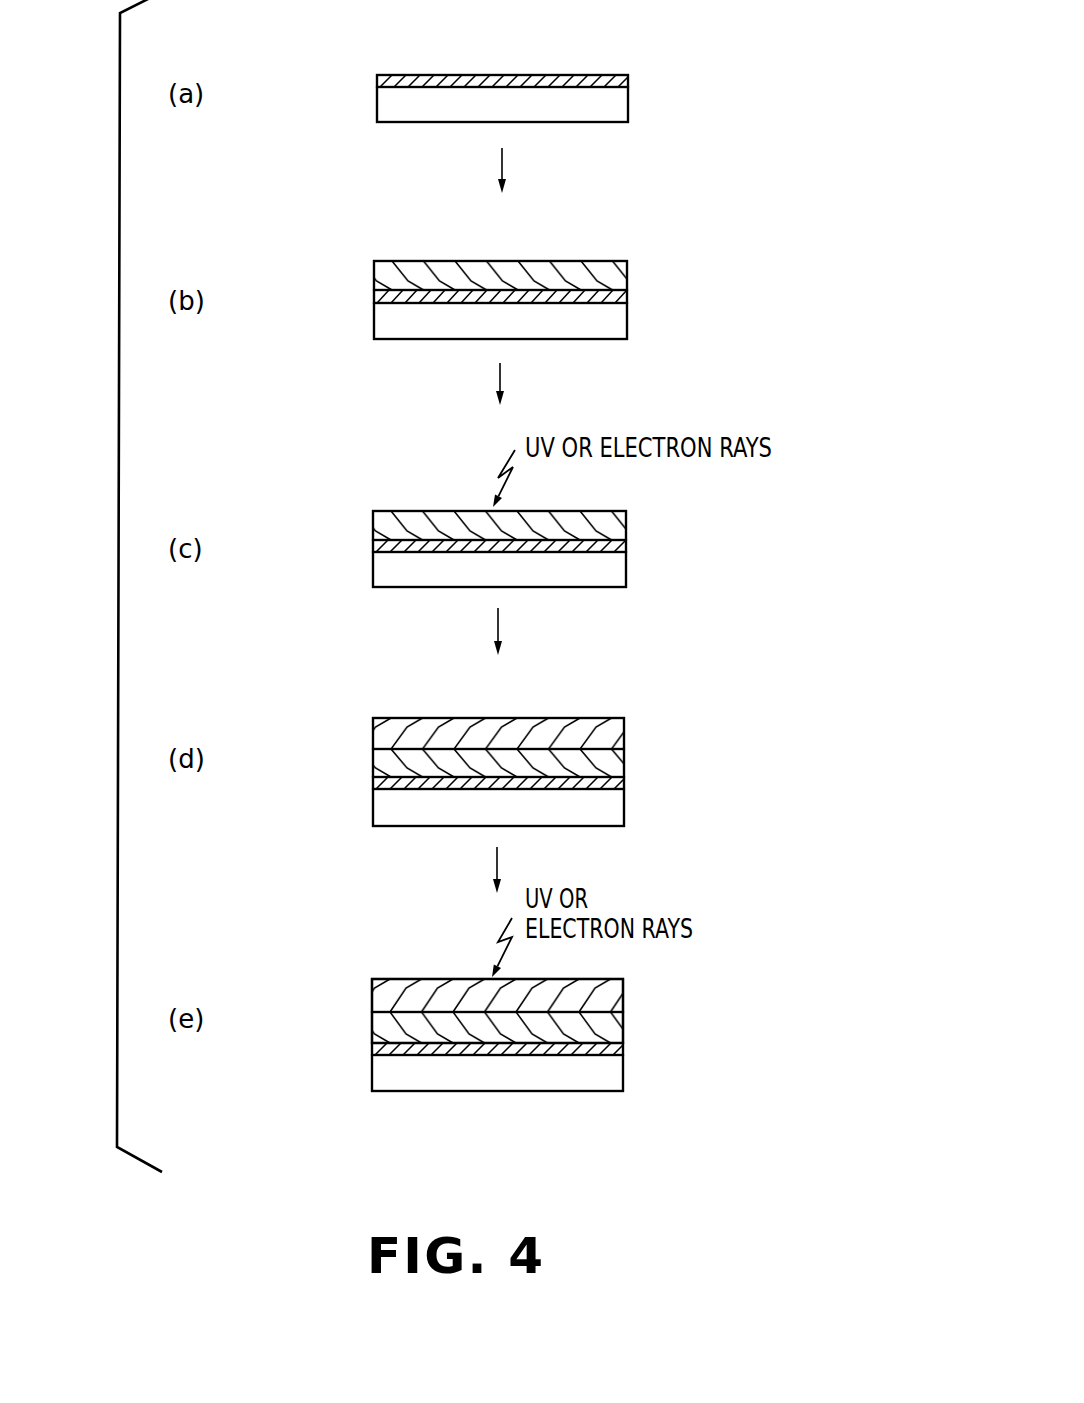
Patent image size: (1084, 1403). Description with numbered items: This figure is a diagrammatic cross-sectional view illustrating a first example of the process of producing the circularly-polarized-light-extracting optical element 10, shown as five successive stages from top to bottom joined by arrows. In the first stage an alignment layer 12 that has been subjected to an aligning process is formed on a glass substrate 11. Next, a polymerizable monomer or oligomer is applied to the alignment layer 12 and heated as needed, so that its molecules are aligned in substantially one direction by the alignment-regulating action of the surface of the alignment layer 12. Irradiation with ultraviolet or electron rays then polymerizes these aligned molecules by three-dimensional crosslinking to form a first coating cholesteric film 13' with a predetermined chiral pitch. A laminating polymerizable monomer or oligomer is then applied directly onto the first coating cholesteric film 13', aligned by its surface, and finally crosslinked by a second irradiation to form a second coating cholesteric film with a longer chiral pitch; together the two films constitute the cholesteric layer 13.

The circularly-polarized-light-extracting optical element 10 is at (726, 951).
The glass substrate 11 is at (614, 111).
The alignment layer 12 is at (628, 78).
The cholesteric layer 13 is at (574, 1002).
The first coating cholesteric film 13' is at (542, 645).